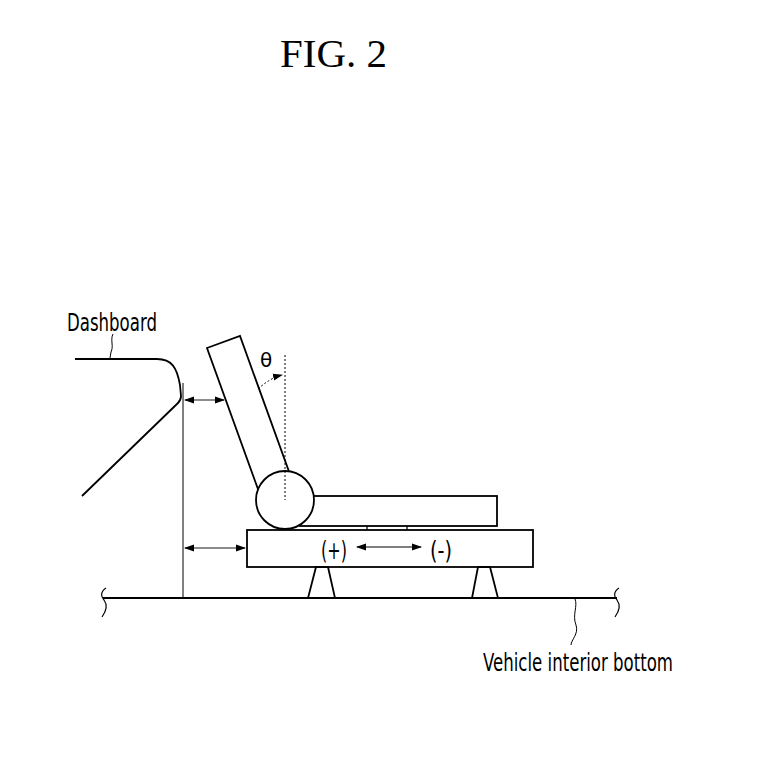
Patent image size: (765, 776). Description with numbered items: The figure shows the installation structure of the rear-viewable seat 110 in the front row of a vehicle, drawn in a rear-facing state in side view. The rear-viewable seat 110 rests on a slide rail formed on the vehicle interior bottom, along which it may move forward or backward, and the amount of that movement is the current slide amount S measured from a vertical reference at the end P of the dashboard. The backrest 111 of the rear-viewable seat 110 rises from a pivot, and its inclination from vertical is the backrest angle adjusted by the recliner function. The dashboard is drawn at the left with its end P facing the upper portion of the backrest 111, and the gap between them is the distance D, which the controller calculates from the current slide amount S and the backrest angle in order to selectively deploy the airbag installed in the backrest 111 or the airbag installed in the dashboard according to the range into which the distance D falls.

The rear-viewable seat 110 is at (417, 493).
The backrest 111 is at (218, 339).
The end of the dashboard P is at (182, 505).
The distance between the dashboard and the backrest D is at (204, 413).
The current slide amount S is at (215, 534).